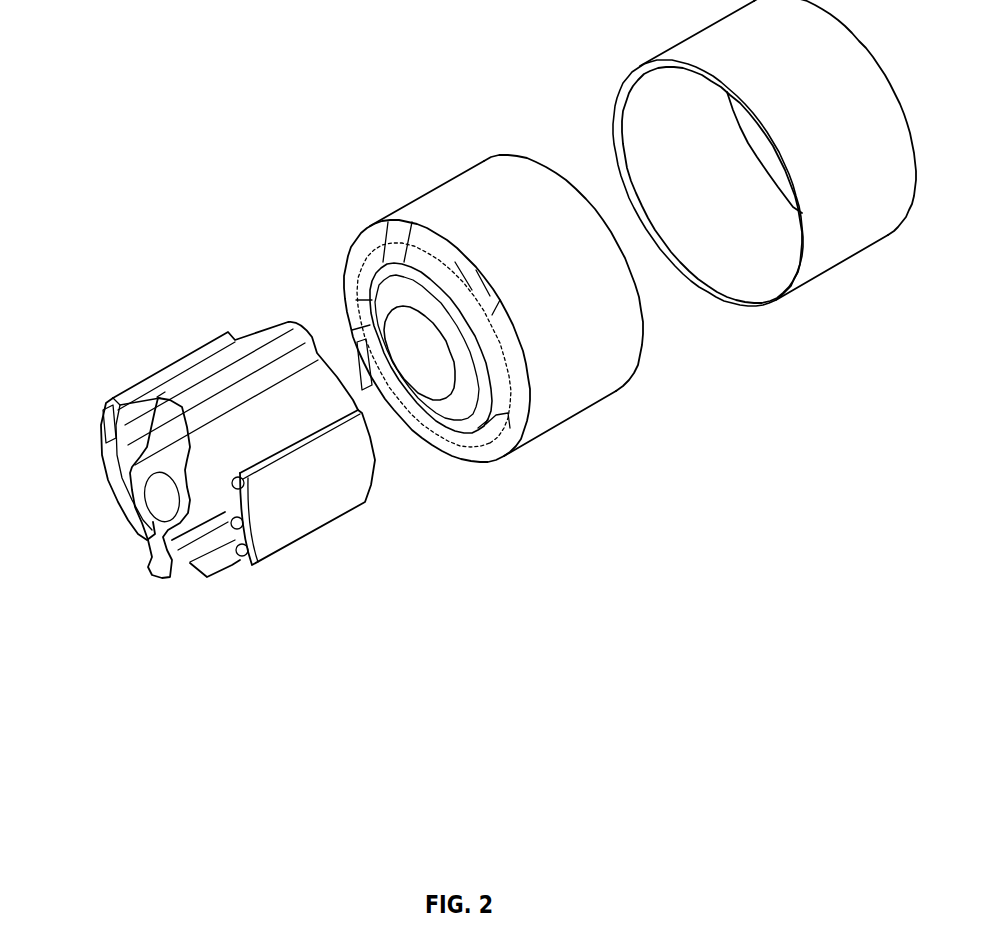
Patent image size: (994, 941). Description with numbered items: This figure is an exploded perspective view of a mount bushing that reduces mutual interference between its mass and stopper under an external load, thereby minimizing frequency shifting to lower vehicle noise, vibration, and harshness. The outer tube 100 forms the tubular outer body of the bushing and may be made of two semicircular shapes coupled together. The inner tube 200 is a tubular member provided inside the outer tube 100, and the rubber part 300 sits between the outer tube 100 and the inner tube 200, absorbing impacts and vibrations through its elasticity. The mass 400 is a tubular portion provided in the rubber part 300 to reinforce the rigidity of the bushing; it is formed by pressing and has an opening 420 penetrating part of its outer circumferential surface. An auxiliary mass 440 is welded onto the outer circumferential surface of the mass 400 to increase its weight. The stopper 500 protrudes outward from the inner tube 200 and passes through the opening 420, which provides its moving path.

The outer tube 100 is at (850, 240).
The inner tube 200 is at (137, 503).
The rubber part 300 is at (585, 390).
The mass 400 is at (278, 397).
The opening 420 is at (195, 568).
The auxiliary mass 440 is at (313, 515).
The stopper 500 is at (157, 568).